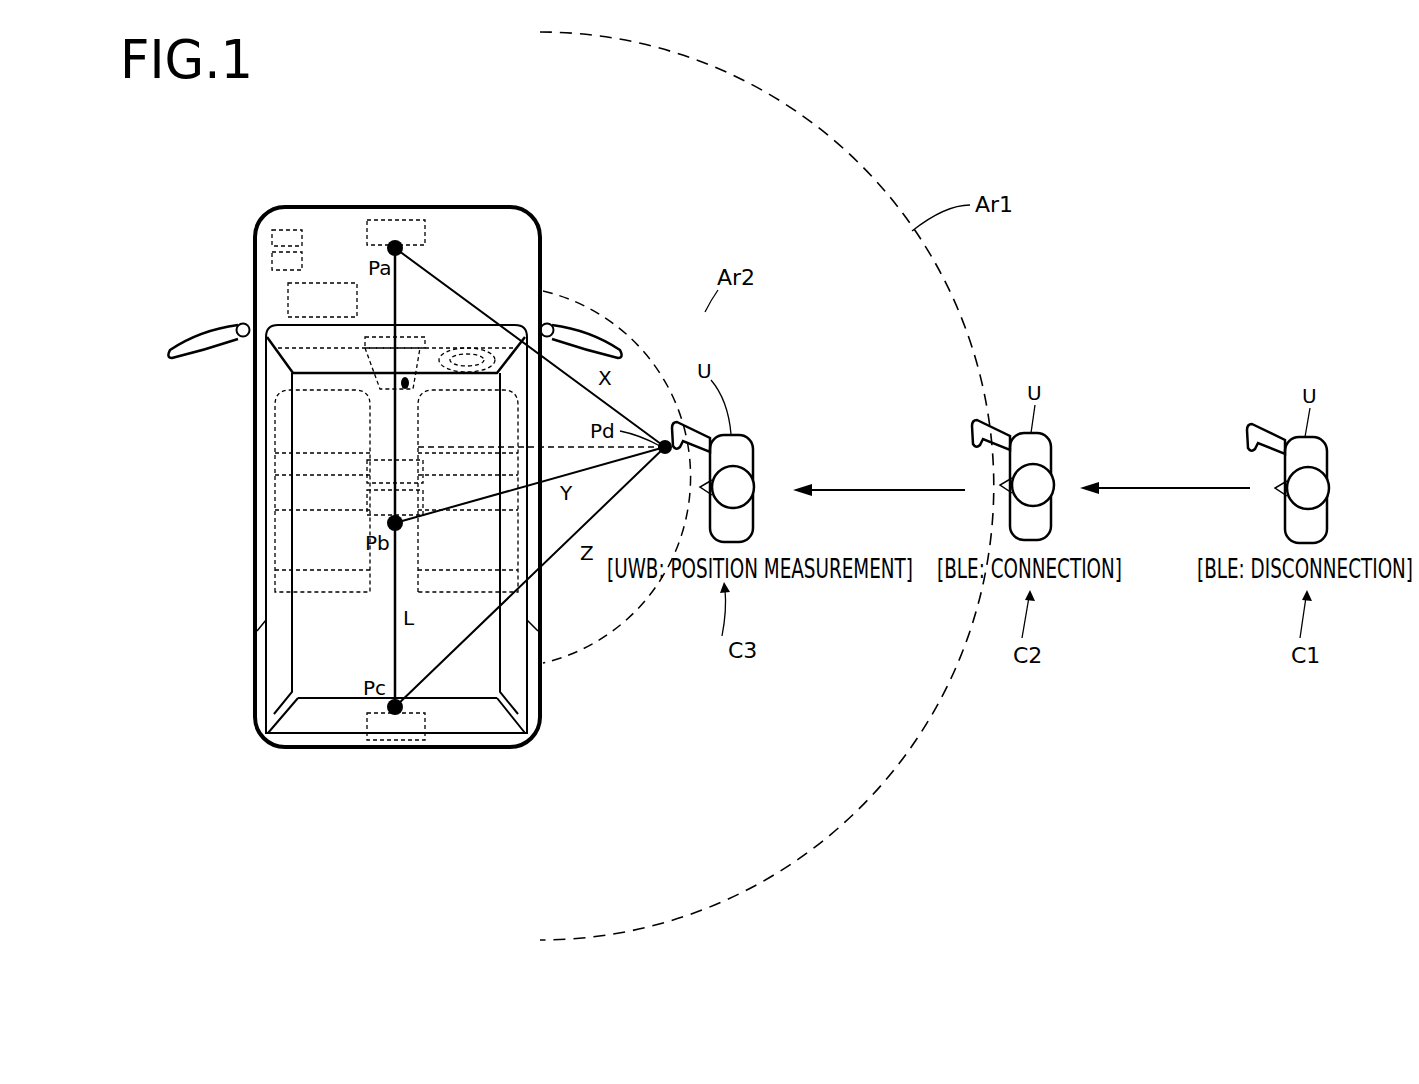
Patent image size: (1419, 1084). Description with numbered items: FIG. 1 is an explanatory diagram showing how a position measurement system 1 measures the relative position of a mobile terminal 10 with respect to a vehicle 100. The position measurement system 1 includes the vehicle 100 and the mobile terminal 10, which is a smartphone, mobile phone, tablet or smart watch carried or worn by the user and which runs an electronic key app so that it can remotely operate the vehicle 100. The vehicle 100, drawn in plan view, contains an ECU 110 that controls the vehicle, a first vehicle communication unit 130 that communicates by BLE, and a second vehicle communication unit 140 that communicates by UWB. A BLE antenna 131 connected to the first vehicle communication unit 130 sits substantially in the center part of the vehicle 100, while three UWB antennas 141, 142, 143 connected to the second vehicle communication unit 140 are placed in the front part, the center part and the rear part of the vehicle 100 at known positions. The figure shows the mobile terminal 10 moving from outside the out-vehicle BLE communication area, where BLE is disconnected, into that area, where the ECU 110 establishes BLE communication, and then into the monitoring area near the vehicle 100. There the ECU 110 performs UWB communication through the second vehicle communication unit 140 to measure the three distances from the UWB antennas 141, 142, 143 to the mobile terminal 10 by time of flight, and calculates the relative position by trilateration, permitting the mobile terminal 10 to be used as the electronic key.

The position measurement system 1 is at (646, 197).
The mobile terminal 10 is at (680, 447).
The vehicle 100 is at (465, 205).
The ECU 110 is at (284, 297).
The first vehicle communication unit 130 is at (272, 234).
The BLE antenna 131 is at (383, 455).
The second vehicle communication unit 140 is at (272, 260).
The UWB antenna 141 is at (426, 230).
The UWB antenna 142 is at (367, 505).
The UWB antenna 143 is at (396, 750).